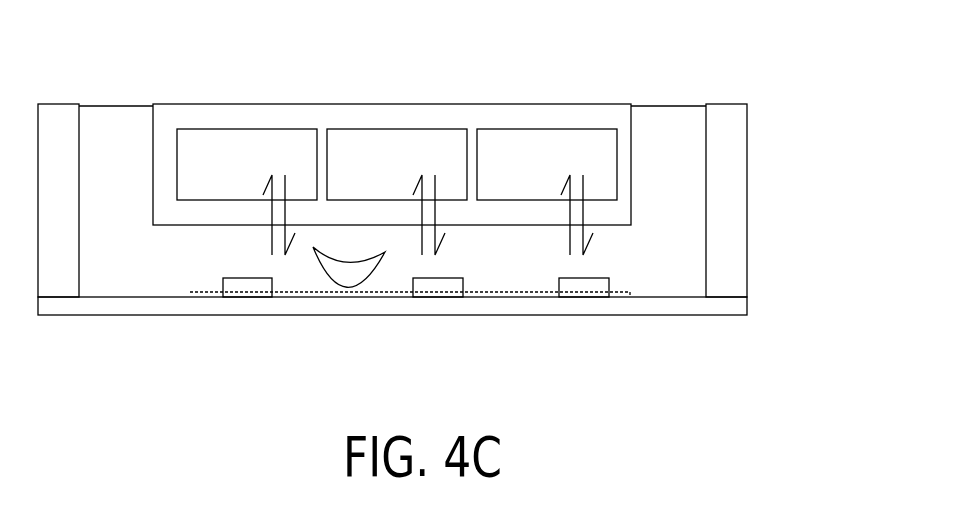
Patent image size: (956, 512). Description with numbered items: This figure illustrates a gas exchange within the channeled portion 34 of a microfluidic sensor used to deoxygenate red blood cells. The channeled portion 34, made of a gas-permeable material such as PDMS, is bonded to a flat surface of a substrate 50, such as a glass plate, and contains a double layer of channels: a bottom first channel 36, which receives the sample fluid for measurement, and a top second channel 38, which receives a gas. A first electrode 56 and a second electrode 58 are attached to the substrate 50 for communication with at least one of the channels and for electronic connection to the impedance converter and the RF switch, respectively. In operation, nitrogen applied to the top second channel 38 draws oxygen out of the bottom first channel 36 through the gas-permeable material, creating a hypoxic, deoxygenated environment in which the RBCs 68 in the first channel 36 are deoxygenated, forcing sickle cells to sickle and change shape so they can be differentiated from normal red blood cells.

The channeled portion 34 is at (748, 173).
The first channel 36 is at (667, 125).
The second channel 38 is at (567, 103).
The substrate 50 is at (748, 312).
The first electrode 56 is at (250, 288).
The second electrode 58 is at (448, 288).
The RBCs 68 is at (347, 280).